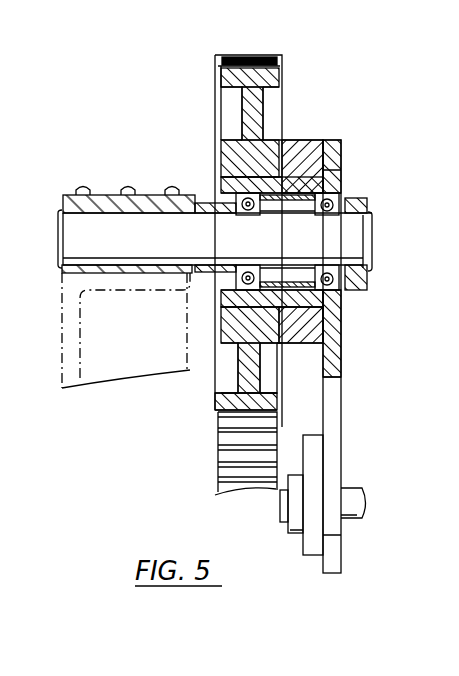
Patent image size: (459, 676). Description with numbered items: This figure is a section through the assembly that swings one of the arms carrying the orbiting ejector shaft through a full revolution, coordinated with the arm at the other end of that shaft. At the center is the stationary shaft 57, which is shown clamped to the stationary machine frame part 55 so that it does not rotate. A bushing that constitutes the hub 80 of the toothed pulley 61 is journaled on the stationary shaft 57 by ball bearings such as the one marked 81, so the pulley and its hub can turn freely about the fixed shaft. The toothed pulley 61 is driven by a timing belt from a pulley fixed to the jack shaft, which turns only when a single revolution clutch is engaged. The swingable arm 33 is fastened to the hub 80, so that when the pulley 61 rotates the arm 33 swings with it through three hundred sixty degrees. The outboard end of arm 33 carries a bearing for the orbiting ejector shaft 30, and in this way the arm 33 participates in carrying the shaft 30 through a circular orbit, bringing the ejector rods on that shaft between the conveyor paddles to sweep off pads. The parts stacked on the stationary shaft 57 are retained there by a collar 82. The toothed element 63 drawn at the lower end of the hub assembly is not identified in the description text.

The shaft 30 is at (357, 488).
The swingable arm 33 is at (343, 400).
The stationary machine frame member 55 is at (62, 372).
The stationary shaft 57 is at (363, 230).
The toothed pulley 61 is at (278, 76).
The sprocket 63 is at (218, 459).
The hub 80 is at (308, 145).
The ball bearing 81 is at (240, 190).
The collar 82 is at (364, 199).